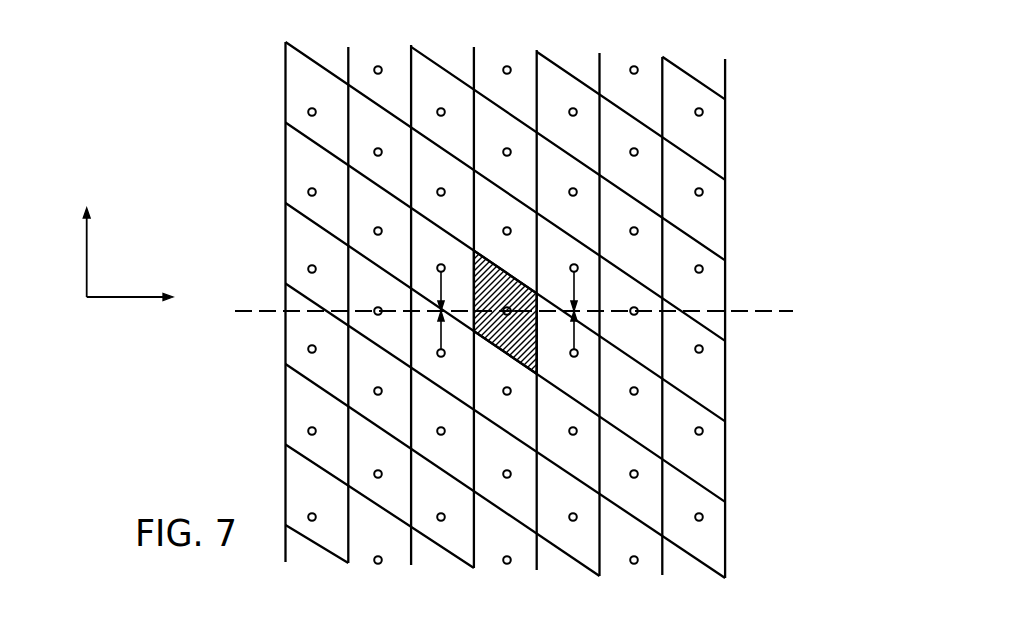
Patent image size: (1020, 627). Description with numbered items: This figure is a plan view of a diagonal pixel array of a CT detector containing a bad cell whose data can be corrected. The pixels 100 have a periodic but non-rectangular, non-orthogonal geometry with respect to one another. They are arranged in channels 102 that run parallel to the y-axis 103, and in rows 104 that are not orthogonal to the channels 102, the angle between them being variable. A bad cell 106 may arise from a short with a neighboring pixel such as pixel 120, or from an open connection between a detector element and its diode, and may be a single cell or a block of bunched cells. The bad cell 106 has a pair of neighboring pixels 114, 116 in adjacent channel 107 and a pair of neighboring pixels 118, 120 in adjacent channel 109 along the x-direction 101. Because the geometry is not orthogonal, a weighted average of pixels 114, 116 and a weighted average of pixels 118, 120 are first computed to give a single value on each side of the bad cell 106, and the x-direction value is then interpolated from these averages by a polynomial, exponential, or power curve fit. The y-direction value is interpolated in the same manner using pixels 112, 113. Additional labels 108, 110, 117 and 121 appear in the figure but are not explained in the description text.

The pixels 100 is at (744, 74).
The x-direction 101 is at (127, 297).
The channels 102 is at (312, 563).
The y-axis 103 is at (87, 258).
The rows 104 is at (268, 161).
The bad cell 106 is at (513, 270).
The adjacent channel 107 is at (441, 565).
The column electrode 108 is at (496, 565).
The adjacent channel 109 is at (563, 568).
The aperture array 110 is at (750, 485).
The pixel 112 is at (535, 232).
The pixel 113 is at (528, 398).
The neighboring pixel 114 is at (437, 285).
The neighboring pixel 116 is at (435, 336).
The center line 117 is at (433, 313).
The neighboring pixel 118 is at (578, 287).
The neighboring pixel 120 is at (578, 338).
The center line 121 is at (578, 311).